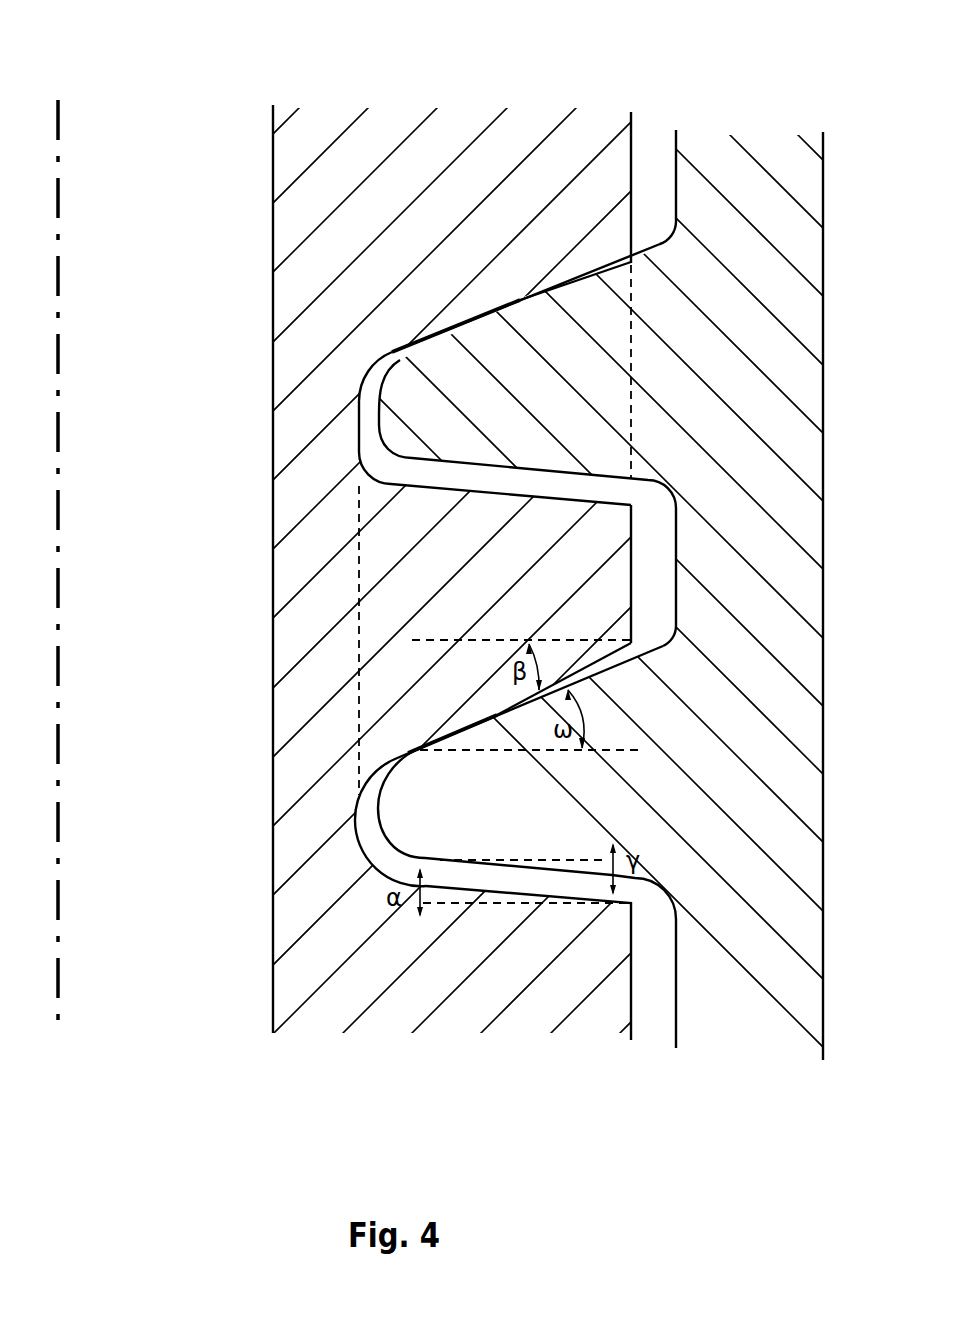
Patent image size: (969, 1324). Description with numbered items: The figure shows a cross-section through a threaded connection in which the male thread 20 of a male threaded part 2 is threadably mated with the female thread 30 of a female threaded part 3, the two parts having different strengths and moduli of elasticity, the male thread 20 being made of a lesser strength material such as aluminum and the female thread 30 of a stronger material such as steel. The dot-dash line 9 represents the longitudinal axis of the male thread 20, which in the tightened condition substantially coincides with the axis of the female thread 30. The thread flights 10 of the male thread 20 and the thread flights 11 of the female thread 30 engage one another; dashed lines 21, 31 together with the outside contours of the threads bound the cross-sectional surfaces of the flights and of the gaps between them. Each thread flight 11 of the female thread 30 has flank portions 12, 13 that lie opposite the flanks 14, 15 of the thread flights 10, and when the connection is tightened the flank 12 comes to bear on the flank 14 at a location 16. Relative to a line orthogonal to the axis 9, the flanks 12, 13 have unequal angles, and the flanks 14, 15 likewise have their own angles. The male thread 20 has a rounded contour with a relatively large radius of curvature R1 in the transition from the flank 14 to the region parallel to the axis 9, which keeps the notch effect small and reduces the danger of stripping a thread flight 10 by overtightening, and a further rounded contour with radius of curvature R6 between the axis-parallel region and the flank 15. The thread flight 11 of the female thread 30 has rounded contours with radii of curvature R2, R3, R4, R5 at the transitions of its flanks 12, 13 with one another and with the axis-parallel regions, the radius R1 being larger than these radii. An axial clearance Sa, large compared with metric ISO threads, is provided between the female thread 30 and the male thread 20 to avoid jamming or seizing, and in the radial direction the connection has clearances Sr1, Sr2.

The male threaded part 2 is at (484, 662).
The female threaded part 3 is at (484, 662).
The longitudinal axis 9 is at (58, 172).
The thread flight of male thread 10 is at (481, 596).
The thread flight of female thread 11 is at (591, 404).
The flank of female thread flight 12 is at (507, 718).
The flank of female thread flight 13 is at (503, 862).
The flank of male thread flight 14 is at (510, 716).
The flank of male thread flight 15 is at (498, 892).
The bearing location 16 is at (420, 748).
The male thread 20 is at (300, 272).
The dashed line 21 is at (359, 519).
The female thread 30 is at (795, 291).
The dashed line 31 is at (631, 336).
The radius of curvature R1 is at (370, 383).
The radius of curvature R2 is at (670, 645).
The radius of curvature R3 is at (672, 486).
The radius of curvature R4 is at (392, 442).
The radius of curvature R5 is at (388, 372).
The radius of curvature R6 is at (347, 482).
The axial clearance Sa is at (538, 440).
The radial clearance Sr1 is at (388, 802).
The radial clearance Sr2 is at (686, 589).